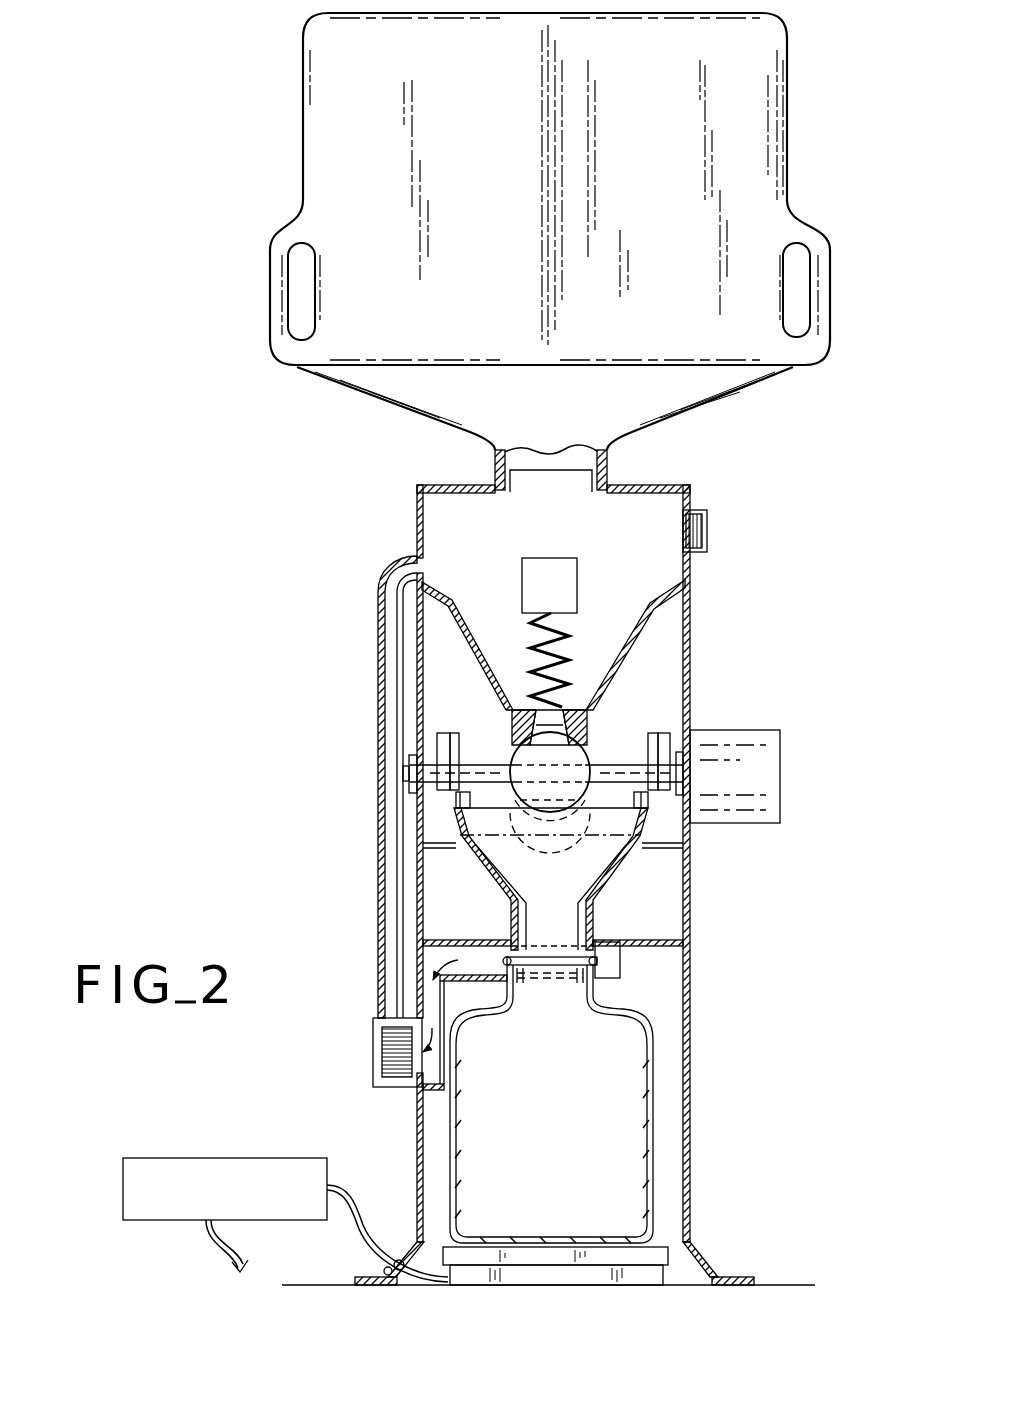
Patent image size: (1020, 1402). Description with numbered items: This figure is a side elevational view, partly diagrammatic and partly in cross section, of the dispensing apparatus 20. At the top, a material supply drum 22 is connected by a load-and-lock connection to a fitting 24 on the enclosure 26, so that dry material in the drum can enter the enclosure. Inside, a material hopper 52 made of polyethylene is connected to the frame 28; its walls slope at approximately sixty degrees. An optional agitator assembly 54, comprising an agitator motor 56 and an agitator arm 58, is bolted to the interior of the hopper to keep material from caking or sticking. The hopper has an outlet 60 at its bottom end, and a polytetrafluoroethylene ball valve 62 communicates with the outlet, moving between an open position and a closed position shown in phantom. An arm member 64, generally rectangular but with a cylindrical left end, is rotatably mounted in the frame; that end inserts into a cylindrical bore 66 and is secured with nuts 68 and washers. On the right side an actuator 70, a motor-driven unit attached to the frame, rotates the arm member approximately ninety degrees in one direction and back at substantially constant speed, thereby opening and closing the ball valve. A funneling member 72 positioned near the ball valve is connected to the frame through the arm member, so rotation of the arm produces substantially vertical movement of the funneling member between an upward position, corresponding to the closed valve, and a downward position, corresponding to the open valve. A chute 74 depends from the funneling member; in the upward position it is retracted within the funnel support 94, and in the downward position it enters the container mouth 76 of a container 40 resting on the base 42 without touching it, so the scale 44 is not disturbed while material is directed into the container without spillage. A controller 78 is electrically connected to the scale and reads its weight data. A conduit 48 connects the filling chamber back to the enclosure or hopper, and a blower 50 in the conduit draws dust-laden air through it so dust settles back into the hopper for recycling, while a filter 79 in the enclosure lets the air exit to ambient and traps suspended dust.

The dispensing system 20 is at (195, 601).
The material supply drum 22 is at (325, 116).
The fitting 24 is at (523, 480).
The enclosure 26 is at (690, 490).
The frame 28 is at (420, 485).
The container 40 is at (653, 1120).
The base 42 is at (370, 1277).
The scale 44 is at (527, 1277).
The conduit 48 is at (378, 632).
The blower 50 is at (373, 1053).
The material hopper 52 is at (645, 605).
The agitator assembly 54 is at (503, 548).
The agitator motor 56 is at (535, 585).
The agitator arm 58 is at (570, 657).
The hopper outlet 60 is at (580, 757).
The ball valve 62 is at (592, 740).
The arm member 64 is at (655, 770).
The cylindrical bore 66 is at (412, 772).
The nuts 68 is at (405, 794).
The actuator 70 is at (770, 793).
The funneling member 72 is at (632, 855).
The chute 74 is at (598, 958).
The container mouth 76 is at (596, 980).
The controller 78 is at (200, 1158).
The filter 79 is at (707, 522).
The funnel support 94 is at (600, 928).